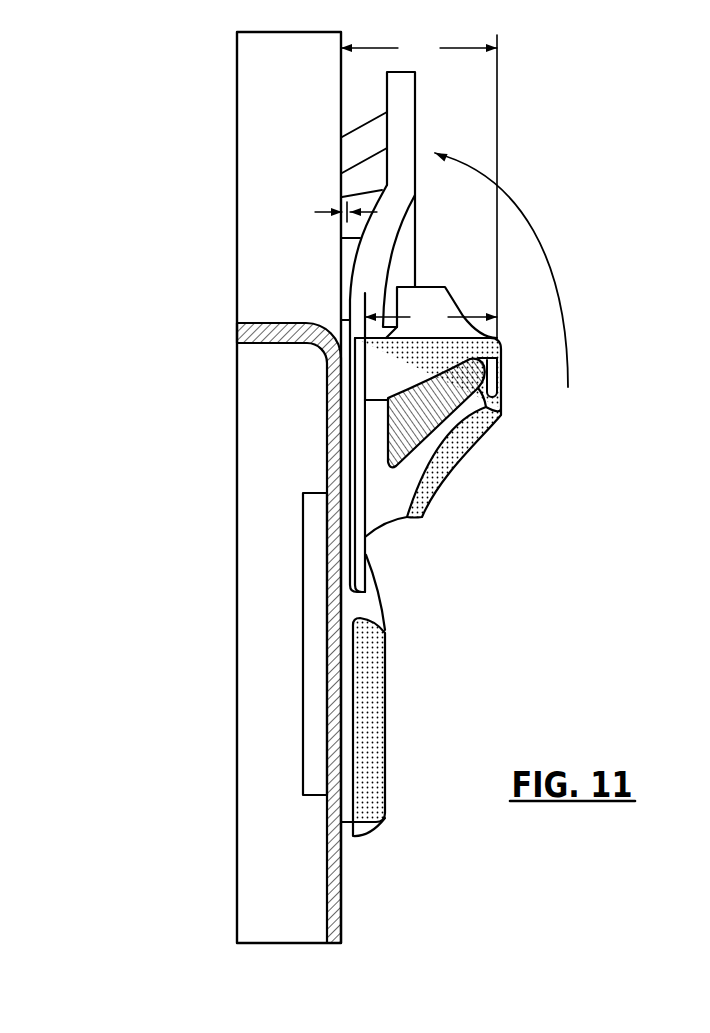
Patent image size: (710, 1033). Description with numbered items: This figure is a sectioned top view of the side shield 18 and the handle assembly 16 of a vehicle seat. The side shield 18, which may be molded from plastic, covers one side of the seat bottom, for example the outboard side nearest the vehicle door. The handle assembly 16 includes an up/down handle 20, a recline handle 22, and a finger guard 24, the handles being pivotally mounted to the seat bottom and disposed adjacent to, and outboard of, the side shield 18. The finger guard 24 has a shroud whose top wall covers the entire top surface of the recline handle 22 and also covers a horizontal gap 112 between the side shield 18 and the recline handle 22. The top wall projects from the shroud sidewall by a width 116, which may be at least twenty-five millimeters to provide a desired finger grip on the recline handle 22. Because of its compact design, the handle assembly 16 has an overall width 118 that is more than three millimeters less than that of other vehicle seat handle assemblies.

The handle assembly 16 is at (560, 227).
The side shield 18 is at (227, 115).
The up/down handle 20 is at (388, 722).
The recline handle 22 is at (462, 403).
The finger guard 24 is at (368, 557).
The horizontal gap 112 is at (328, 213).
The width 116 is at (431, 317).
The overall width 118 is at (419, 186).